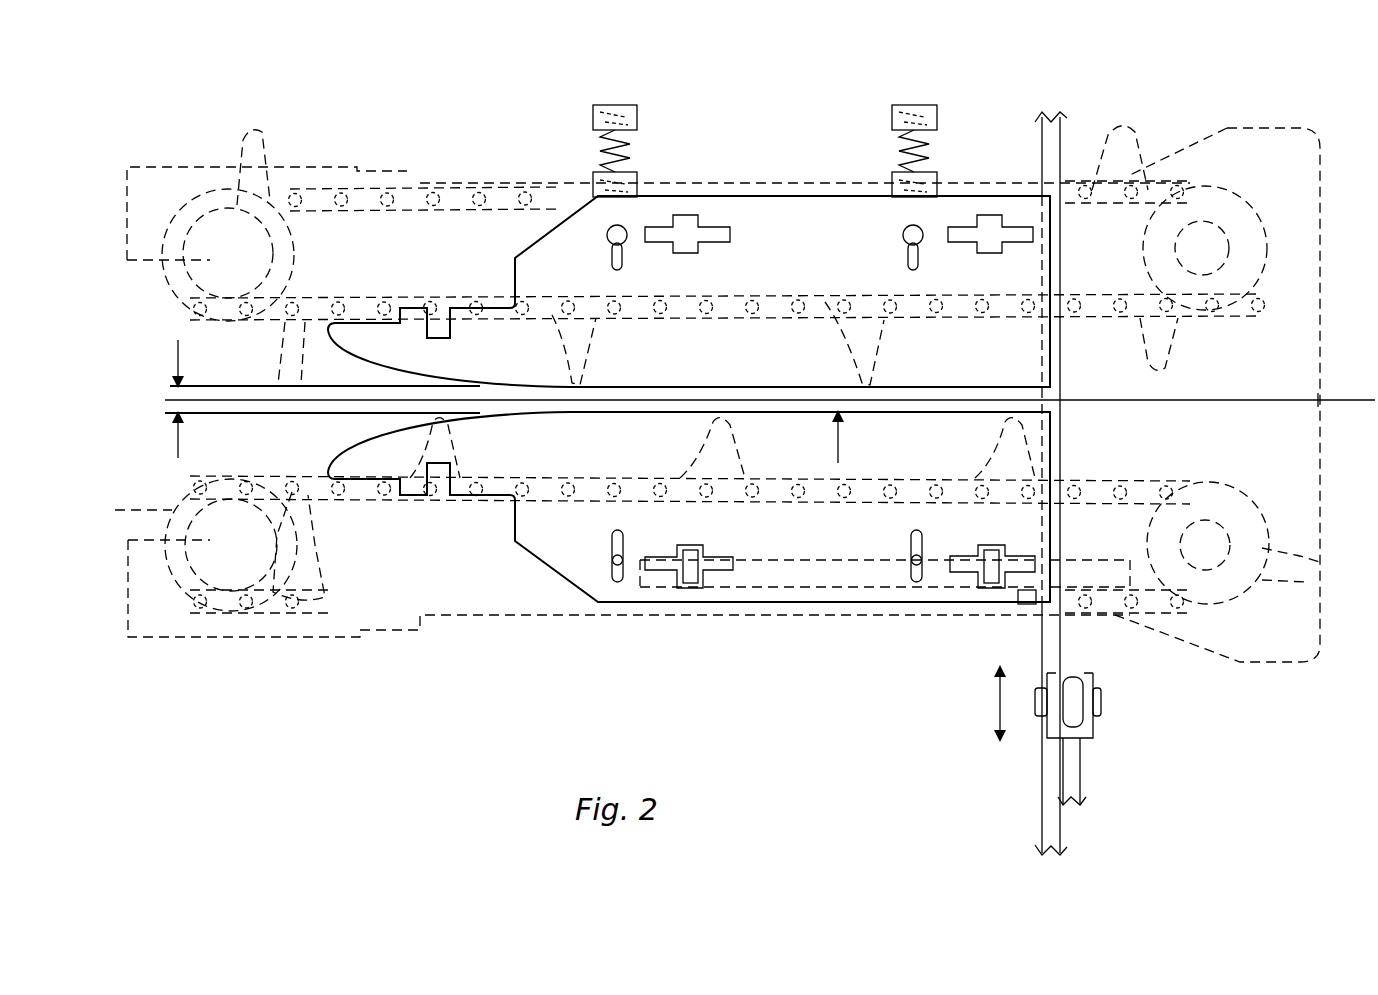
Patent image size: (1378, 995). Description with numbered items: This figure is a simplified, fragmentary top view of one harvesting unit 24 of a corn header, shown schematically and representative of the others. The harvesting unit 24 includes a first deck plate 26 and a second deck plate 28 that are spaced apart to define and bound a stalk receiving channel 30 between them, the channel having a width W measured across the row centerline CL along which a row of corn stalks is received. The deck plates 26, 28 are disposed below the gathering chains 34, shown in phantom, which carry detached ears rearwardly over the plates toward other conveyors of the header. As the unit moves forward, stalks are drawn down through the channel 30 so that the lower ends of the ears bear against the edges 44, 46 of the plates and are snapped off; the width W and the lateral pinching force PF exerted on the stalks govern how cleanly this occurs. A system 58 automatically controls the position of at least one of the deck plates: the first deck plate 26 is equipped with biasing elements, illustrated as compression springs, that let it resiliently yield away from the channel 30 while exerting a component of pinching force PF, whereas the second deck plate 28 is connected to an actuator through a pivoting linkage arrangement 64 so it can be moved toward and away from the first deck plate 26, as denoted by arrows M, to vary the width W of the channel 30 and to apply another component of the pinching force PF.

The harvesting unit 24 is at (1280, 125).
The first deck plate 26 is at (780, 196).
The second deck plate 28 is at (698, 607).
The stalk receiving channel 30 is at (714, 393).
The gathering chains 34 is at (782, 300).
The edge of first deck plate 44 is at (928, 400).
The edge of second deck plate 46 is at (968, 400).
The system for automatically controlling deck plate position 58 is at (1090, 780).
The pivoting linkage arrangement 64 is at (1093, 722).